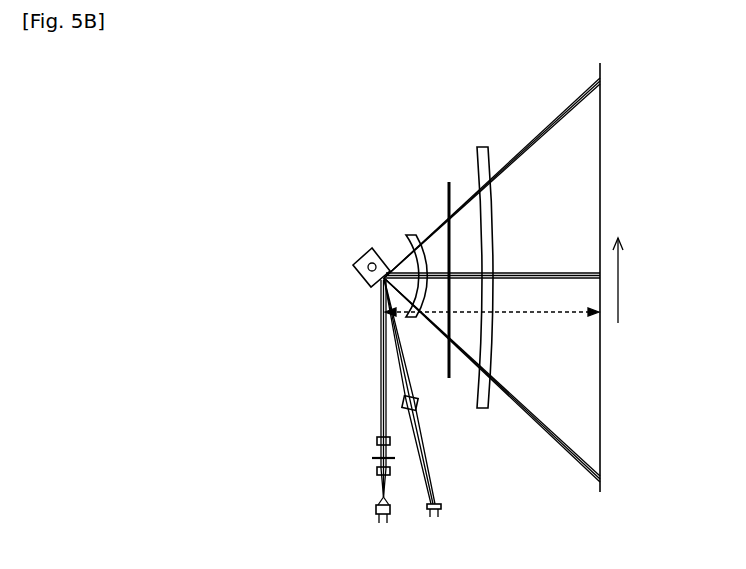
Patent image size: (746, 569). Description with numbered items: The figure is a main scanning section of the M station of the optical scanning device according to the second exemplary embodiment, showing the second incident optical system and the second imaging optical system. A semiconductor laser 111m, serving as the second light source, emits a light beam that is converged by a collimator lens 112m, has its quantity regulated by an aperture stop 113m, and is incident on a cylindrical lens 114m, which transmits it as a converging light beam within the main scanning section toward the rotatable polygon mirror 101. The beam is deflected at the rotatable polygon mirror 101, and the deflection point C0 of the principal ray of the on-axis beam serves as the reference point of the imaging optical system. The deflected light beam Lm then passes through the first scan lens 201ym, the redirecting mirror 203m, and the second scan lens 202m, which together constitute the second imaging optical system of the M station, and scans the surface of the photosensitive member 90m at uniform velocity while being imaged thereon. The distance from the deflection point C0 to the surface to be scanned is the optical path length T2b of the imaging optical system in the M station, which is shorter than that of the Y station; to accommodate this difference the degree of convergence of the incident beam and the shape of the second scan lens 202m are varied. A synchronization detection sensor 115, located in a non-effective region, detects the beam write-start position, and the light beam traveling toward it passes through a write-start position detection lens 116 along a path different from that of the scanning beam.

The rotatable polygon mirror 101 is at (354, 277).
The deflection point C0 is at (371, 247).
The light beam Lm is at (548, 272).
The optical path length of the imaging optical system in the M station T2b is at (492, 300).
The first scan lens 201ym is at (410, 235).
The redirecting mirror 203m is at (448, 182).
The second scan lens 202m is at (482, 146).
The photosensitive member 90m is at (600, 488).
The write-start position detection lens 116 is at (418, 406).
The synchronization detection sensor 115 is at (442, 506).
The cylindrical lens 114m is at (377, 441).
The aperture stop 113m is at (372, 458).
The collimator lens 112m is at (377, 471).
The semiconductor laser 111m is at (376, 512).